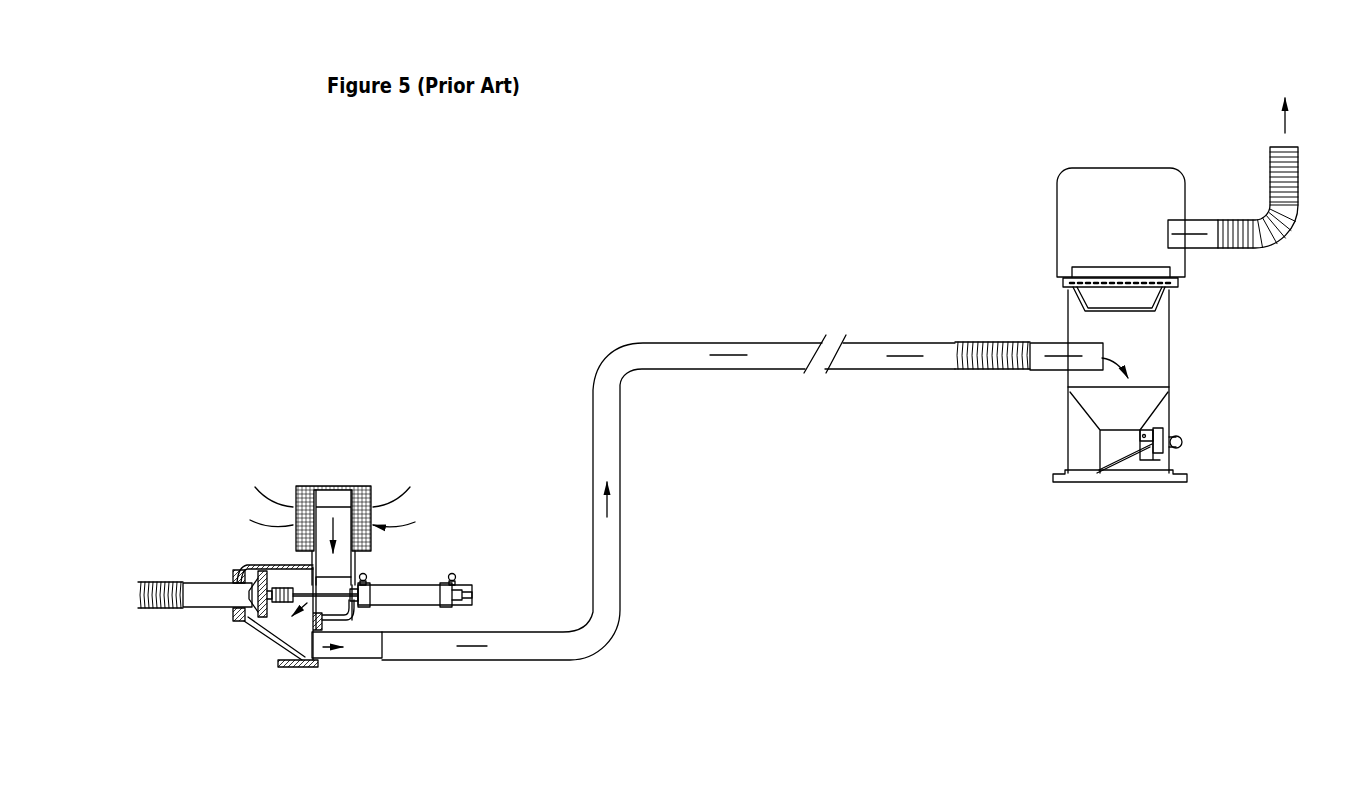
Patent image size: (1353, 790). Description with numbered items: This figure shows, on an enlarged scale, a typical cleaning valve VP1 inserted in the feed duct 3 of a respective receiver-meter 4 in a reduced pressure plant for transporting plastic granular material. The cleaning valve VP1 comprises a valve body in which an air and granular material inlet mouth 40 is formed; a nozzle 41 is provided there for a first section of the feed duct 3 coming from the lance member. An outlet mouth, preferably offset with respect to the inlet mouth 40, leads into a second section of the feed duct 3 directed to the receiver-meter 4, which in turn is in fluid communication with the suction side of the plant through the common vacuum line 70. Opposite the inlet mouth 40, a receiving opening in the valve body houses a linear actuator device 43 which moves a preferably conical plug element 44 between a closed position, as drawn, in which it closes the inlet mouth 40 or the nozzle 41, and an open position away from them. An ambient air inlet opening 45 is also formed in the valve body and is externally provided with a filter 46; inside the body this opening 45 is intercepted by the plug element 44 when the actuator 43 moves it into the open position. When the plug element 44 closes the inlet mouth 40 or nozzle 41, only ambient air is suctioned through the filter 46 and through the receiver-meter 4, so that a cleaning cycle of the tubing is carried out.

The feed duct 3 is at (167, 582).
The receiver-meter 4 is at (1172, 347).
The inlet mouth 40 is at (262, 623).
The nozzle 41 is at (193, 610).
The linear actuator device 43 is at (393, 587).
The conical plug element 44 is at (247, 569).
The ambient air inlet opening 45 is at (360, 584).
The filter 46 is at (333, 484).
The vacuum line 70 is at (1303, 208).
The cleaning valve VP1 is at (238, 613).